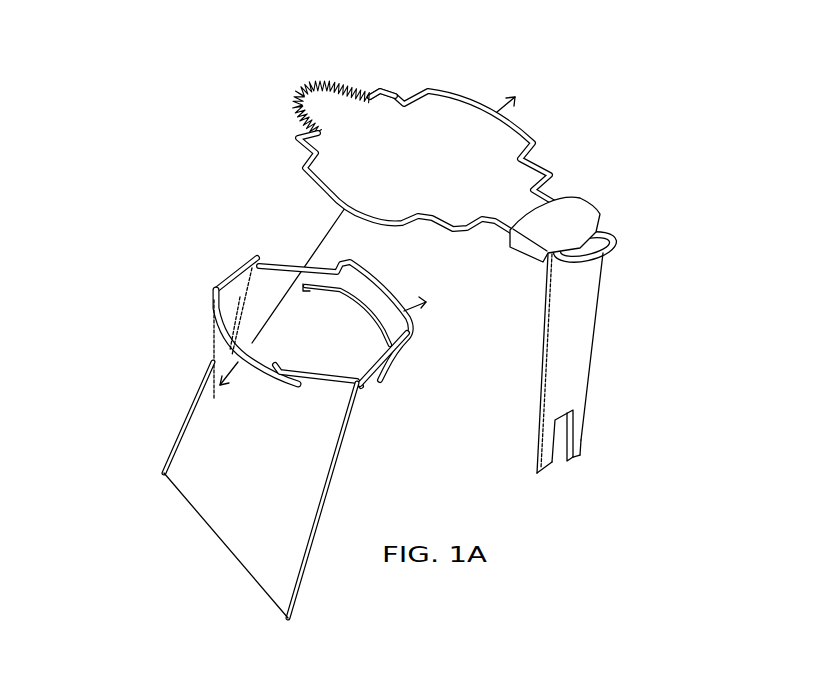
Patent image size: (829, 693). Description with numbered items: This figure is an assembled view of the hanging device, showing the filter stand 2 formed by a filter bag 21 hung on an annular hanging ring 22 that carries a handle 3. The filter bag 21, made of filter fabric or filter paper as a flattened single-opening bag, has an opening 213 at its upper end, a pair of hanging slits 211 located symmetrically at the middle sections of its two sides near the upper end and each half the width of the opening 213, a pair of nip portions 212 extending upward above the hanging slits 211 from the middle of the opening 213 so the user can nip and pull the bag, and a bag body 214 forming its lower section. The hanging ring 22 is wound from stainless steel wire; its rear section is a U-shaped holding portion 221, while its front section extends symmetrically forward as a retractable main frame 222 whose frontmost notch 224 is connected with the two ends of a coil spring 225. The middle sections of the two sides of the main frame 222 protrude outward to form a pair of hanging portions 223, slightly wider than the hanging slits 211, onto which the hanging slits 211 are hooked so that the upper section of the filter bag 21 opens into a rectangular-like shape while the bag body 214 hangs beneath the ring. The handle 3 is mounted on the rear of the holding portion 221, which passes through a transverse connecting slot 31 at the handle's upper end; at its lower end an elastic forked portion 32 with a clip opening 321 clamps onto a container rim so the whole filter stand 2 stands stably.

The filter stand 2 is at (248, 213).
The filter bag 21 is at (187, 417).
The hanging slits 211 is at (378, 316).
The nip portions 212 is at (397, 293).
The opening 213 is at (366, 353).
The bag body 214 is at (258, 470).
The hanging ring 22 is at (543, 155).
The holding portion 221 is at (613, 230).
The main frame 222 is at (401, 99).
The hanging portions 223 is at (338, 333).
The notch 224 is at (364, 90).
The coil spring 225 is at (293, 90).
The handle 3 is at (580, 333).
The connecting slot 31 is at (590, 230).
The forked portion 32 is at (557, 430).
The clip opening 321 is at (552, 462).